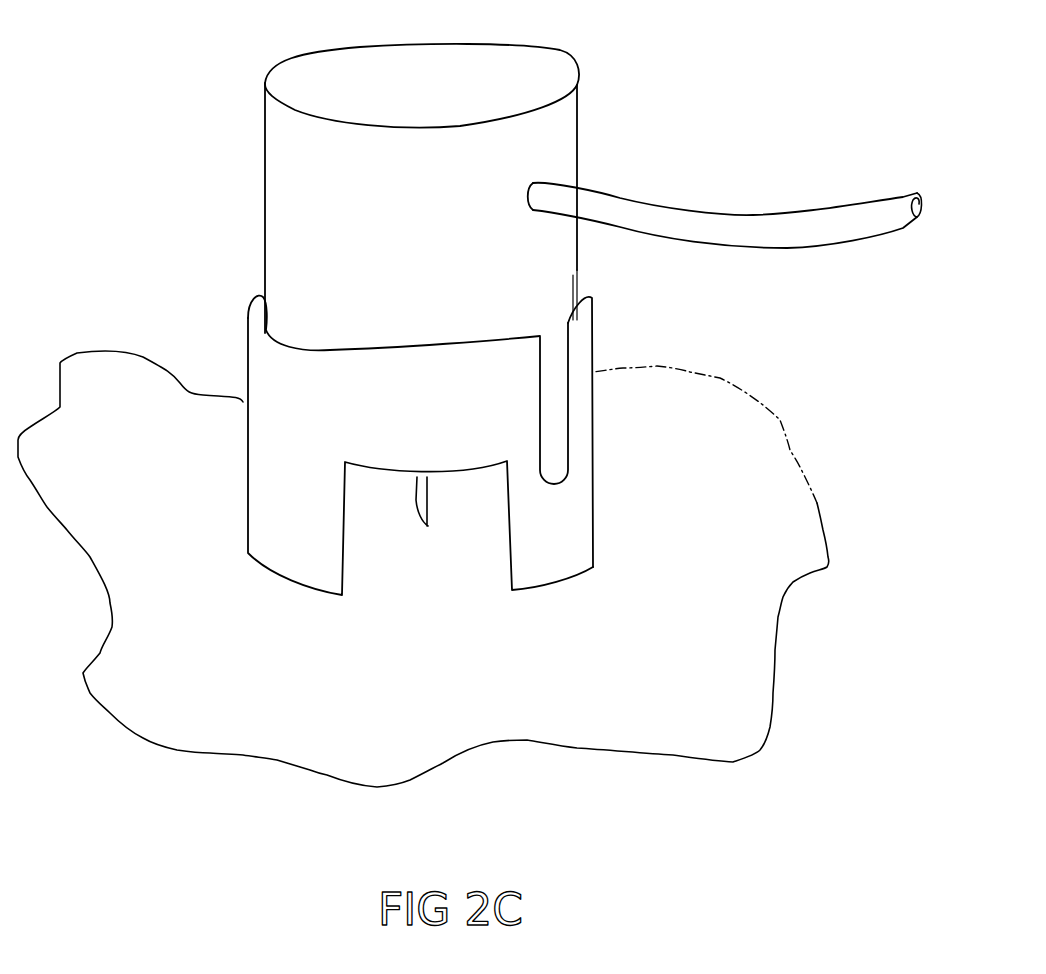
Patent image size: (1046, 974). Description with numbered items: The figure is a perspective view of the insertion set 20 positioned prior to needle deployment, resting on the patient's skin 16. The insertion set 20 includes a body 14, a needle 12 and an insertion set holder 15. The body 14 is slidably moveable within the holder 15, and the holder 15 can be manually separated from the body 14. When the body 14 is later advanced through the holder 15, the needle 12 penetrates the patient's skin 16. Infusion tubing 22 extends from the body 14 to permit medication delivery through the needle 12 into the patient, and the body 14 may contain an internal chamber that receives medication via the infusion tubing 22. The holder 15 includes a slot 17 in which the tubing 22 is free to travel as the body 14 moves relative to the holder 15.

The needle 12 is at (413, 502).
The body 14 is at (297, 232).
The insertion set holder 15 is at (278, 403).
The patient's skin 16 is at (680, 690).
The slot 17 is at (552, 405).
The insertion set 20 is at (677, 120).
The infusion tubing 22 is at (750, 233).